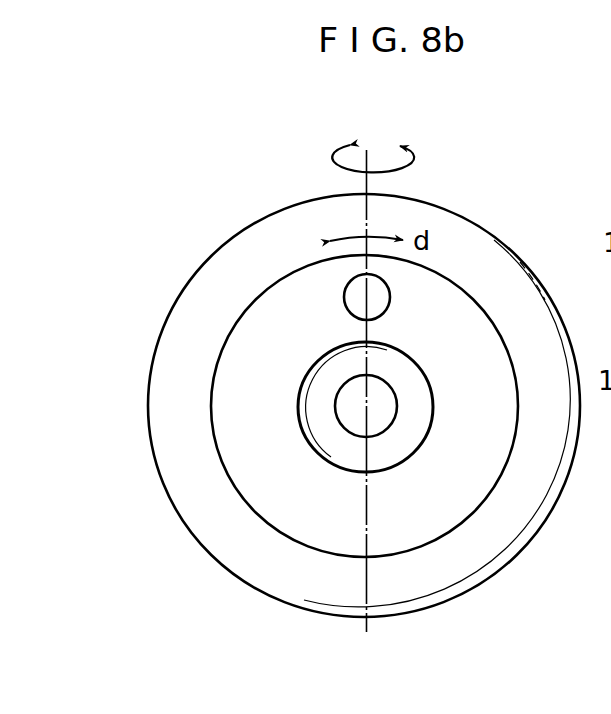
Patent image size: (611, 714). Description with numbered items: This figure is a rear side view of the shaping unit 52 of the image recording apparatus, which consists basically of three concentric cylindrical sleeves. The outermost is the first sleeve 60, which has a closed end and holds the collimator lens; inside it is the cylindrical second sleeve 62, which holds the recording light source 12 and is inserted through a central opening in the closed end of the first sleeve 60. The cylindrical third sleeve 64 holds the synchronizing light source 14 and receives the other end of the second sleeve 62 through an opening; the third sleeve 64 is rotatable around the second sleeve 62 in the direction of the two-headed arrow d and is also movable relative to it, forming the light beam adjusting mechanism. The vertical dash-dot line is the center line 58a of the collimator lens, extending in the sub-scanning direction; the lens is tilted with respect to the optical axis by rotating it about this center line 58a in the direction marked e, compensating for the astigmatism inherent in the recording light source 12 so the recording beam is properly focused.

The recording light source 12 is at (397, 413).
The synchronizing light source 14 is at (390, 295).
The shaping unit 52 is at (238, 207).
The center line 58a is at (372, 182).
The first sleeve 60 is at (183, 322).
The second sleeve 62 is at (332, 450).
The third sleeve 64 is at (418, 532).